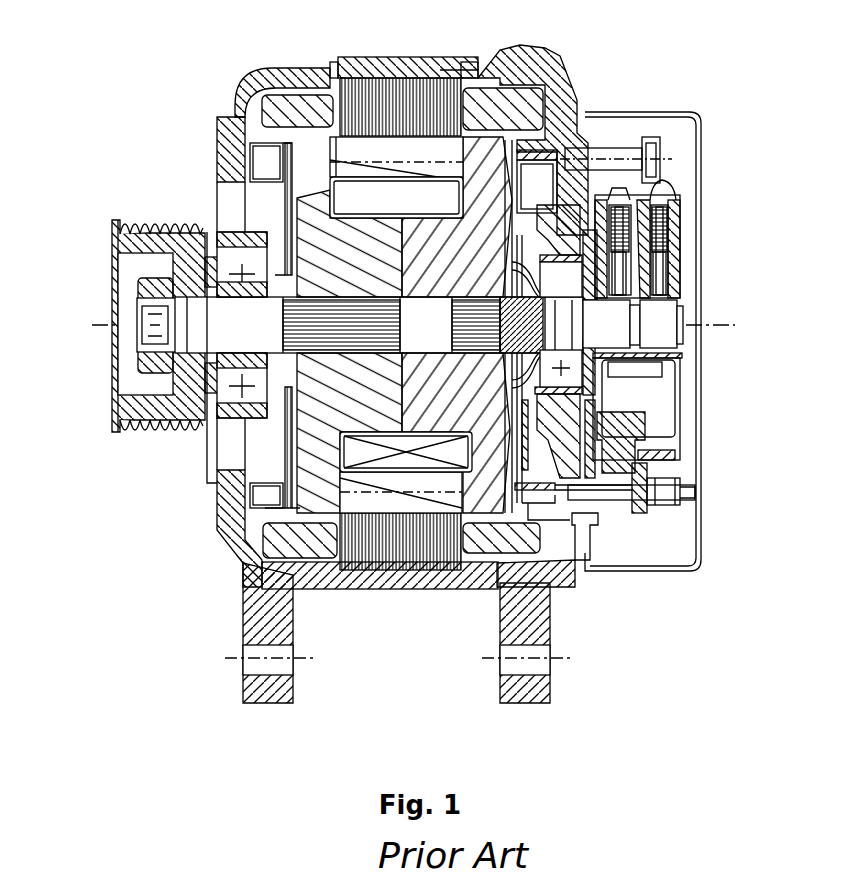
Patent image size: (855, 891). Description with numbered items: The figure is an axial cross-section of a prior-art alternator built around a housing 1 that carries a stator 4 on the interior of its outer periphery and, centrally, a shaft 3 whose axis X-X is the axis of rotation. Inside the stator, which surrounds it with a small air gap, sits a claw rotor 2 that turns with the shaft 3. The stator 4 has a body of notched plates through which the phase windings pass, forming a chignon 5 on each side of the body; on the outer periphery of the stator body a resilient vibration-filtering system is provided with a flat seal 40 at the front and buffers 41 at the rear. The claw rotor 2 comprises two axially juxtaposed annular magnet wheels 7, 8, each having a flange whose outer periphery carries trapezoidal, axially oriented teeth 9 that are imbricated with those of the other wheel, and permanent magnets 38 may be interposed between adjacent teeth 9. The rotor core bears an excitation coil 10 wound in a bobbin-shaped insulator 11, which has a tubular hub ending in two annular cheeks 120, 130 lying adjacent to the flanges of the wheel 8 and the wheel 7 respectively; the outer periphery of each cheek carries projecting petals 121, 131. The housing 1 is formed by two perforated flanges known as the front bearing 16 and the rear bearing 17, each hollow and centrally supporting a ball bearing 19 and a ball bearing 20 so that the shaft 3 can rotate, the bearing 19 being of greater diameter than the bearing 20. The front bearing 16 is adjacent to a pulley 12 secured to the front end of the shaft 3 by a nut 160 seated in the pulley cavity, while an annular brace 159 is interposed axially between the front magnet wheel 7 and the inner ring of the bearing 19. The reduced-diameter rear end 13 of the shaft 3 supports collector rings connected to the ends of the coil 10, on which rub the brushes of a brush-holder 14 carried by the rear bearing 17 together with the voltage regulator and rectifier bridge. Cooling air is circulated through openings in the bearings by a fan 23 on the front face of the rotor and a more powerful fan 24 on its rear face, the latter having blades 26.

The housing 1 is at (402, 356).
The claw rotor 2 is at (404, 341).
The shaft 3 is at (379, 325).
The stator 4 is at (402, 290).
The chignon 5 is at (506, 108).
The front magnet wheel 7 is at (349, 351).
The rear magnet wheel 8 is at (457, 325).
The teeth 9 is at (396, 325).
The excitation coil 10 is at (401, 324).
The insulator 11 is at (286, 484).
The pulley 12 is at (113, 300).
The rear end of the shaft 13 is at (633, 324).
The brush-holder 14 is at (688, 224).
The front bearing 16 is at (232, 136).
The rear bearing 17 is at (588, 242).
The ball bearing 19 is at (242, 325).
The ball bearing 20 is at (561, 324).
The fan 23 is at (252, 128).
The fan 24 is at (533, 147).
The blades 26 is at (267, 165).
The permanent magnets 38 is at (458, 494).
The flat seal 40 is at (337, 76).
The buffers 41 is at (463, 75).
The annular cheek 120 is at (566, 532).
The petals 121 is at (366, 140).
The annular cheek 130 is at (440, 452).
The petals 131 is at (455, 445).
The annular brace 159 is at (216, 444).
The nut 160 is at (148, 383).